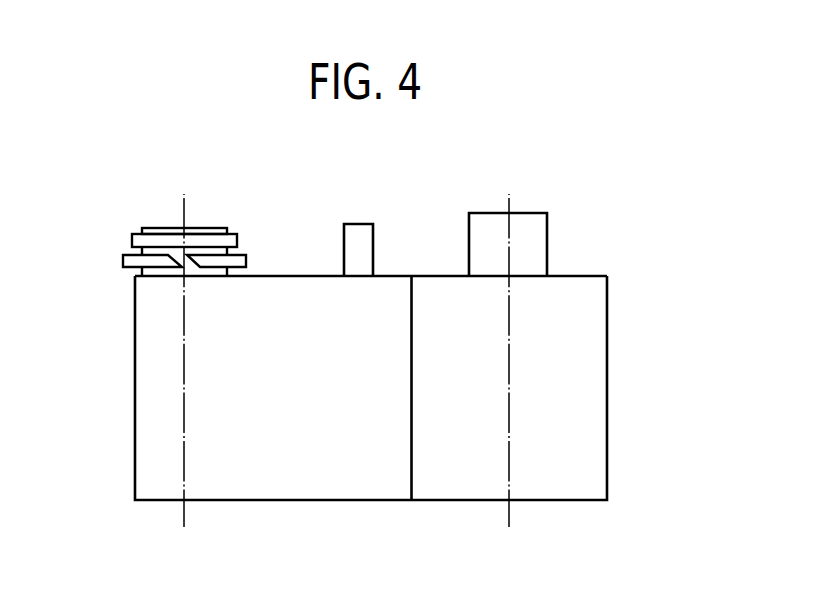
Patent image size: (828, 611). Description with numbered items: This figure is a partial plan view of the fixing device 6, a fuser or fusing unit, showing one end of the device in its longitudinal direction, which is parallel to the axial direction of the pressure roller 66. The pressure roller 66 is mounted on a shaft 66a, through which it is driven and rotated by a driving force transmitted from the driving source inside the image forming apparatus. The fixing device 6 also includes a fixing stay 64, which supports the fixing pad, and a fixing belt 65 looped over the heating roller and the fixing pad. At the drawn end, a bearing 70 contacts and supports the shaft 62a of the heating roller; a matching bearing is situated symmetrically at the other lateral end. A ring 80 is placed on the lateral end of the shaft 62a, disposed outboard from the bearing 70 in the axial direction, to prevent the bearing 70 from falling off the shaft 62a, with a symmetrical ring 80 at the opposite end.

The fixing device 6 is at (407, 536).
The shaft 62a is at (163, 227).
The fixing stay 64 is at (358, 230).
The fixing belt 65 is at (287, 275).
The pressure roller 66 is at (599, 377).
The shaft 66a is at (526, 218).
The bearing 70 is at (123, 261).
The ring 80 is at (131, 241).